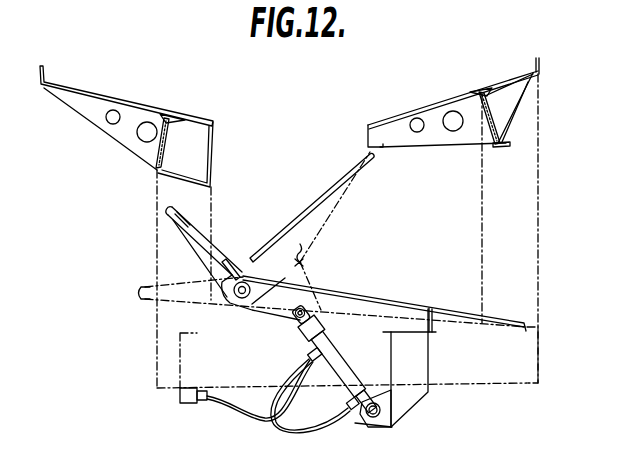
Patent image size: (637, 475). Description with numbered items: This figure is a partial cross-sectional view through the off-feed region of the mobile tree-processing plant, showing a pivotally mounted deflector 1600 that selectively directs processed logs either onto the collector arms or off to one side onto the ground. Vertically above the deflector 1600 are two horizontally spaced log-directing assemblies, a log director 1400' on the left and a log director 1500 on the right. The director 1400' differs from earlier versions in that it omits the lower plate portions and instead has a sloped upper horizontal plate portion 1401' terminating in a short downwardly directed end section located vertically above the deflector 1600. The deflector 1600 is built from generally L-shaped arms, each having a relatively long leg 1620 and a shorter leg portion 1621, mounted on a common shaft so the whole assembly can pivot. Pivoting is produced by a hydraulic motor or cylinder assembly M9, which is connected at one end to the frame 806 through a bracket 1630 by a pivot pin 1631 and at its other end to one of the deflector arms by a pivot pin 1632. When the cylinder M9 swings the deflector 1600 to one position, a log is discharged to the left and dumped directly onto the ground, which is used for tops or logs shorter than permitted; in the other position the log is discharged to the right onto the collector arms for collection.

The sloped upper horizontal plate portion 1401' is at (126, 84).
The log-directing assembly 1400' is at (134, 215).
The log-directing assembly 1500 is at (463, 92).
The pivotally mounted deflector 1600 is at (323, 310).
The shorter leg portion 1621 is at (196, 243).
The relatively long leg 1620 is at (333, 300).
The pivot pin 1632 is at (260, 337).
The hydraulic motor or cylinder assembly M9 is at (289, 370).
The pivot pin 1631 is at (428, 370).
The bracket 1630 is at (390, 426).
The frame 806 is at (540, 348).